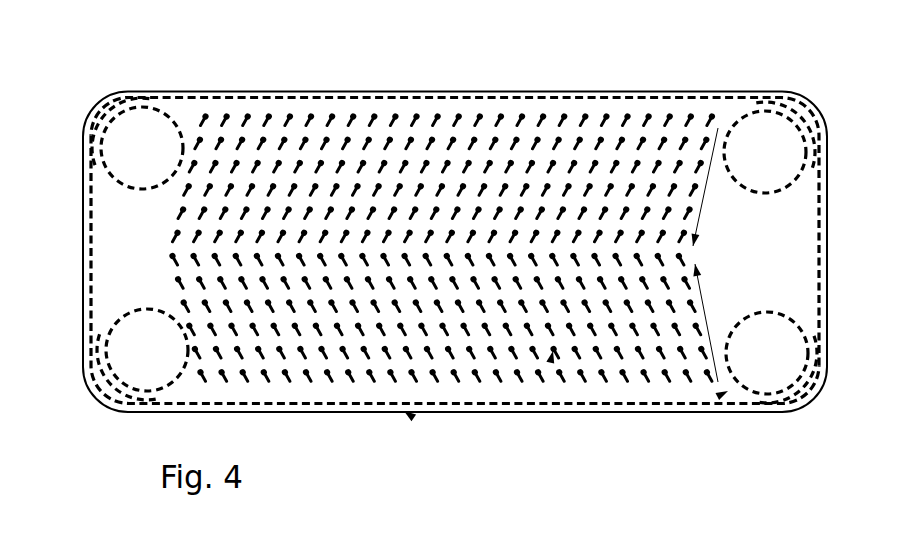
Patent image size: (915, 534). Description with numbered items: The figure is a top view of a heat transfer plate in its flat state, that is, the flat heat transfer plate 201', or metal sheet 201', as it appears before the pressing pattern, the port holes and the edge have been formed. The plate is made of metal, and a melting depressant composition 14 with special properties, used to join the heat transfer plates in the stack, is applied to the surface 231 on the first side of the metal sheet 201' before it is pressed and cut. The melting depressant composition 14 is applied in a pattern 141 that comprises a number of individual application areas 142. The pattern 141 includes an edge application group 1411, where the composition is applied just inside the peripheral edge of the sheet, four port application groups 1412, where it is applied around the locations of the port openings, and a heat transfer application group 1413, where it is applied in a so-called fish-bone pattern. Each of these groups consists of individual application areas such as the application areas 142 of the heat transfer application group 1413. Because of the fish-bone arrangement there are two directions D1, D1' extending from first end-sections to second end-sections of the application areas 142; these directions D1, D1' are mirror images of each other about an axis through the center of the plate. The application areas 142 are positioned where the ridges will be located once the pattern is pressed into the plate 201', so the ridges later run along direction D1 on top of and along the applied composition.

The flat heat transfer plate 201' is at (455, 217).
The surface 231 is at (120, 232).
The edge application group 1411 is at (95, 372).
The port application groups 1412 is at (107, 332).
The heat transfer application group 1413 is at (173, 245).
The melting depressant composition 14 is at (313, 383).
The individual application areas 142 is at (333, 385).
The pattern 141 is at (728, 391).
The second direction D1' is at (796, 187).
The first direction D1 is at (791, 323).